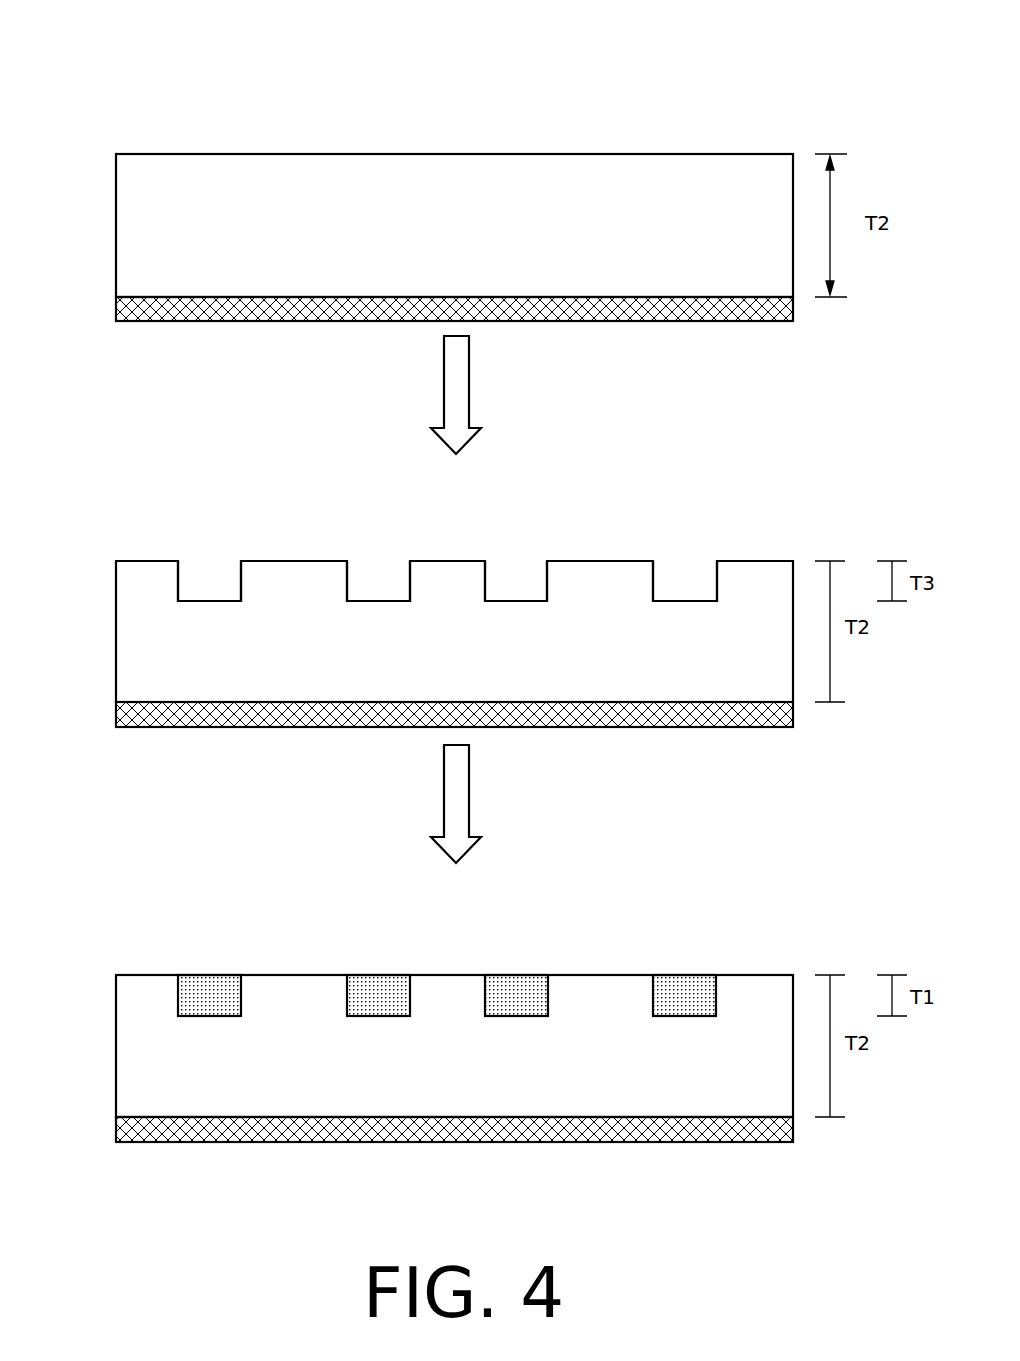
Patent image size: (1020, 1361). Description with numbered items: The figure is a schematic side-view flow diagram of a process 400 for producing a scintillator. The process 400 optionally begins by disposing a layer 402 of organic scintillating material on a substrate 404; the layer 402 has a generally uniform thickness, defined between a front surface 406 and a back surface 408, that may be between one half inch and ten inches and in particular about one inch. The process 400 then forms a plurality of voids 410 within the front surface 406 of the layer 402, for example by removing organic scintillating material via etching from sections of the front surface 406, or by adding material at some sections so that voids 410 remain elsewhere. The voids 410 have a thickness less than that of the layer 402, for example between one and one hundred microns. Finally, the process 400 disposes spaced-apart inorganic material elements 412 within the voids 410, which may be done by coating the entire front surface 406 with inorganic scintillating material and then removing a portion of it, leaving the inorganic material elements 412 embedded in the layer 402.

The process 400 is at (121, 38).
The layer of organic scintillating material 402 is at (273, 177).
The substrate 404 is at (223, 320).
The front surface 406 is at (481, 154).
The back surface 408 is at (257, 298).
The voids 410 is at (683, 580).
The inorganic material elements 412 is at (680, 997).